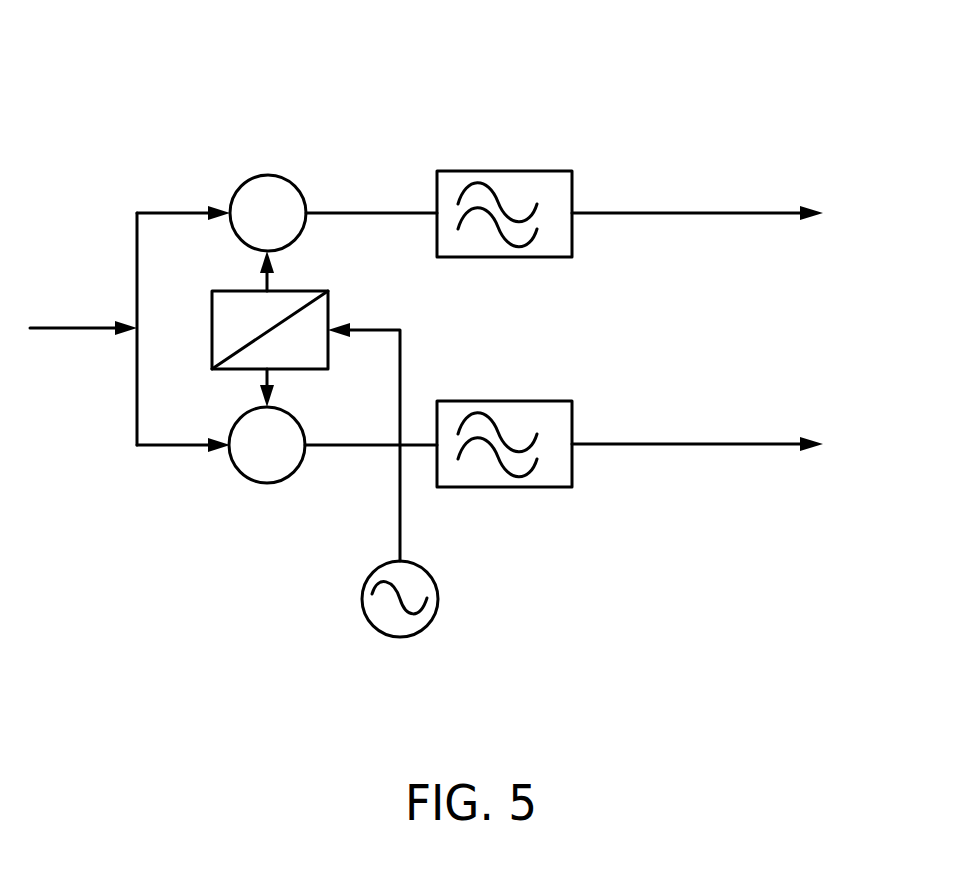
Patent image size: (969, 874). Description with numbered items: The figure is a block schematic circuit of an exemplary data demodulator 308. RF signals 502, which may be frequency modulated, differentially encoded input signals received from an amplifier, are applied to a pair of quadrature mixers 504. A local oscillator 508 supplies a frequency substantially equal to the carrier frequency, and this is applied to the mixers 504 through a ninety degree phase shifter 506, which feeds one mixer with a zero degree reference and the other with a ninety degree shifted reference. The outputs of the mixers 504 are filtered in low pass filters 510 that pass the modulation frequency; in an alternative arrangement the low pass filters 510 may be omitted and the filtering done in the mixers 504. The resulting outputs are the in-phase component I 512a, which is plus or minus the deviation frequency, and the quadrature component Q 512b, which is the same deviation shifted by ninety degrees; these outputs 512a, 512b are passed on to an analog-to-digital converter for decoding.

The data demodulator 308 is at (690, 117).
The RF signals 502 is at (70, 327).
The quadrature mixers 504 is at (264, 176).
The 90° phase shifter 506 is at (303, 291).
The local oscillator 508 is at (430, 623).
The low pass filters 510 is at (523, 171).
The in-phase component I 512a is at (747, 213).
The quadrature component Q 512b is at (748, 444).